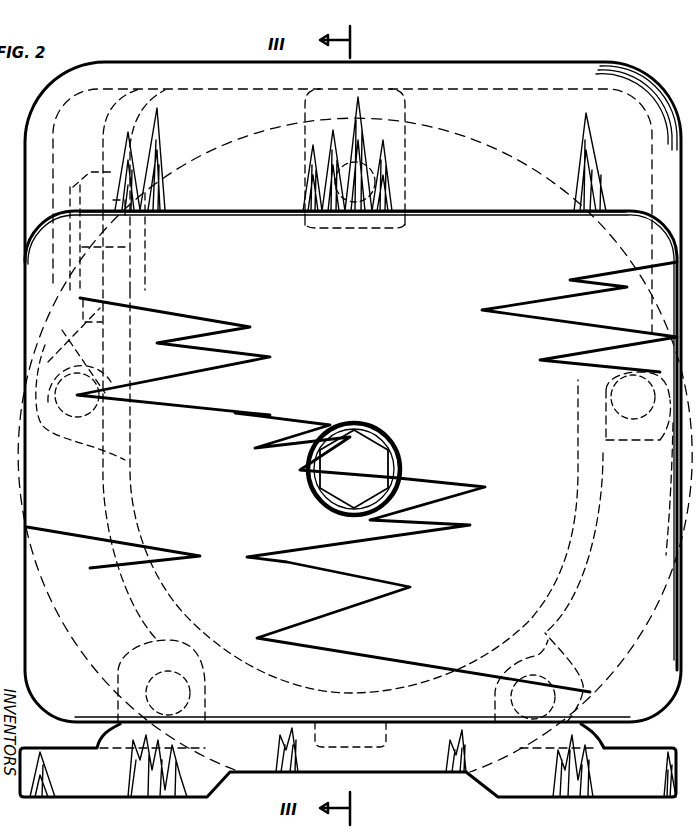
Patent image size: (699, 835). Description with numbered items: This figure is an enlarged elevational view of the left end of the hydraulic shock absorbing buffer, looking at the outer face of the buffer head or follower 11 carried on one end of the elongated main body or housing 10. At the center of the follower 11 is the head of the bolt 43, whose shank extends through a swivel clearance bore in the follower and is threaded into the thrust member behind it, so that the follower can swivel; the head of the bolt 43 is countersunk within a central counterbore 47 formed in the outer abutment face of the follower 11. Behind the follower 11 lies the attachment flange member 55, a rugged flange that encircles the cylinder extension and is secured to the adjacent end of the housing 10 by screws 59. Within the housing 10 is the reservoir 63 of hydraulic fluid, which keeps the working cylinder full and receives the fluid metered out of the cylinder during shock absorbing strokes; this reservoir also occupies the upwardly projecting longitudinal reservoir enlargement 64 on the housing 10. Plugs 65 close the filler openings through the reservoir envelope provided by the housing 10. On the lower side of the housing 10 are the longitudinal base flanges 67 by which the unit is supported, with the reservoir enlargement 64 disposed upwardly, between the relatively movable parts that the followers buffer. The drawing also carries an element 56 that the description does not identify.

The housing 10 is at (596, 568).
The buffer head or follower 11 is at (394, 279).
The bolt 43 is at (385, 457).
The central counterbore 47 is at (370, 436).
The attachment flange member 55 is at (512, 160).
The hidden member 56 is at (112, 205).
The screws 59 is at (378, 188).
The reservoir 63 is at (632, 80).
The reservoir enlargement 64 is at (660, 108).
The plugs 65 is at (125, 236).
The base flanges 67 is at (95, 782).